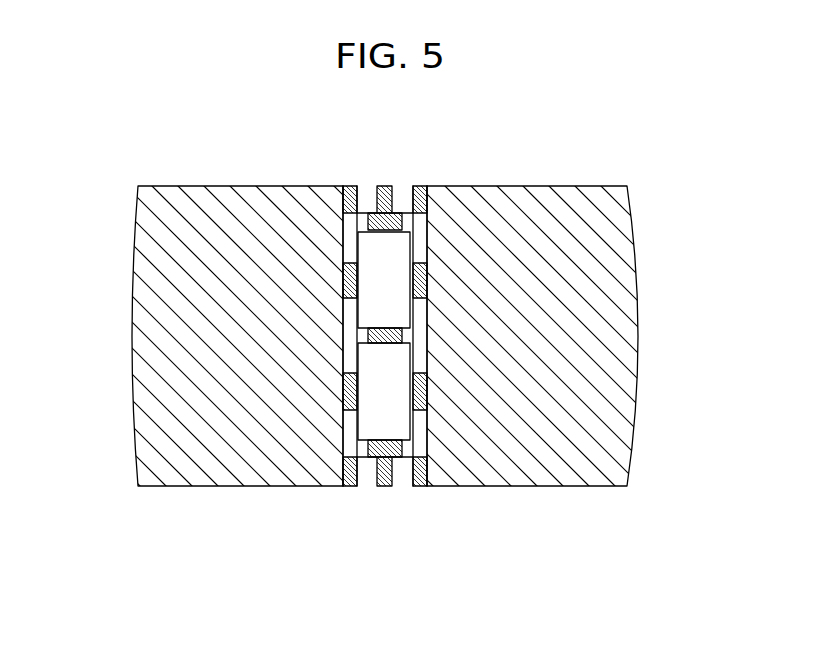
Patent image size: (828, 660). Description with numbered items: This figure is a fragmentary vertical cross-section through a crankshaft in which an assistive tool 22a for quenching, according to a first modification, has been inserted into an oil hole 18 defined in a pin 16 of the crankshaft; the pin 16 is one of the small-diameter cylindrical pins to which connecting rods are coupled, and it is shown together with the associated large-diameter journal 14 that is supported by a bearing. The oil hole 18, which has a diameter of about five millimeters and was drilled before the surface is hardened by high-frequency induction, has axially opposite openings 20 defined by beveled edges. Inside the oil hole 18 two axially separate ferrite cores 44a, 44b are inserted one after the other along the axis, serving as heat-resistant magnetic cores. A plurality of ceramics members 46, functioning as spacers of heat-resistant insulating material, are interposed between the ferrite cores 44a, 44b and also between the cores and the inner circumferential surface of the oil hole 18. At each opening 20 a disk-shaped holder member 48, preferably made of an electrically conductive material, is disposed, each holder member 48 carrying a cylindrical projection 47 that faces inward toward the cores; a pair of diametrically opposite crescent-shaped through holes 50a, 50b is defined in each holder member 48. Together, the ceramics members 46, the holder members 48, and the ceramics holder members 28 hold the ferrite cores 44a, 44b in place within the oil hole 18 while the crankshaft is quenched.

The pin 16 is at (226, 186).
The journal 14 is at (480, 336).
The assistive tool 22a is at (440, 180).
The ceramics member 28 is at (355, 234).
The opening 20 is at (352, 187).
The holder member 48 is at (380, 186).
The through hole 50a is at (366, 474).
The through hole 50b is at (399, 472).
The cylindrical projection 47 is at (402, 220).
The ferrite core 44a is at (387, 252).
The ferrite core 44b is at (387, 418).
The oil hole 18 is at (427, 350).
The ceramics member 46 is at (345, 270).